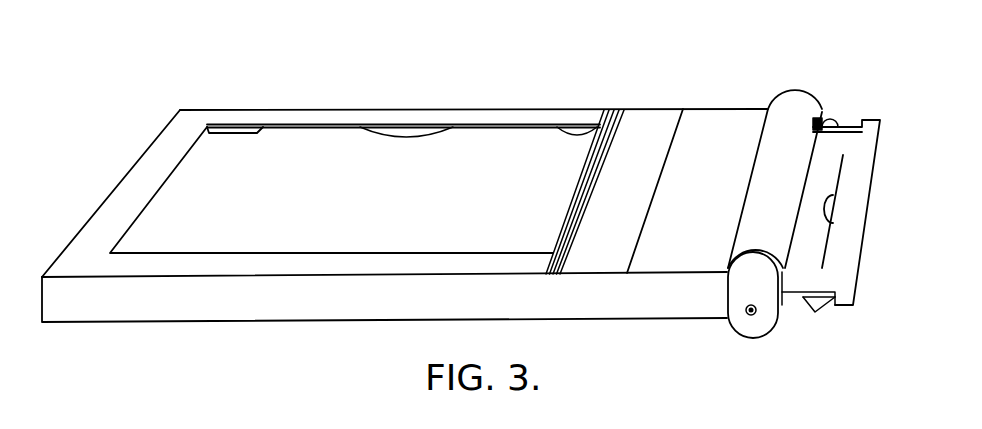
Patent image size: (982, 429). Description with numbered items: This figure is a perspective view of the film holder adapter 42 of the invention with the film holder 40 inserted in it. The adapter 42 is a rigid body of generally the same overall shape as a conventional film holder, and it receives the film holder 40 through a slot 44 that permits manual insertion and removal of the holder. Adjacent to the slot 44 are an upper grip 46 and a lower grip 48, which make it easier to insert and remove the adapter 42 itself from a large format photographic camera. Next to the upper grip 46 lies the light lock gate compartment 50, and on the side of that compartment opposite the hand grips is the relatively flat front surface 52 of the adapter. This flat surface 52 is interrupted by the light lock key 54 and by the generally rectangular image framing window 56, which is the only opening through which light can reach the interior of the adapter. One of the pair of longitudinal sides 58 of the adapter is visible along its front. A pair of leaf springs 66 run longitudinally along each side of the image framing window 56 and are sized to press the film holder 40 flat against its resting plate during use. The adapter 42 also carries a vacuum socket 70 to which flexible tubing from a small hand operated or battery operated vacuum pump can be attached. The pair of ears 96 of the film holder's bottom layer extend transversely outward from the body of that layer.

The film holder 40 is at (838, 146).
The film holder adapter 42 is at (459, 104).
The slot 44 is at (788, 266).
The upper grip 46 is at (790, 108).
The lower grip 48 is at (740, 326).
The light lock gate compartment 50 is at (703, 114).
The front surface 52 is at (536, 117).
The light lock key 54 is at (622, 108).
The image framing window 56 is at (288, 198).
The longitudinal side 58 is at (338, 300).
The leaf springs 66 is at (398, 138).
The vacuum socket 70 is at (752, 316).
The ears 96 is at (829, 118).